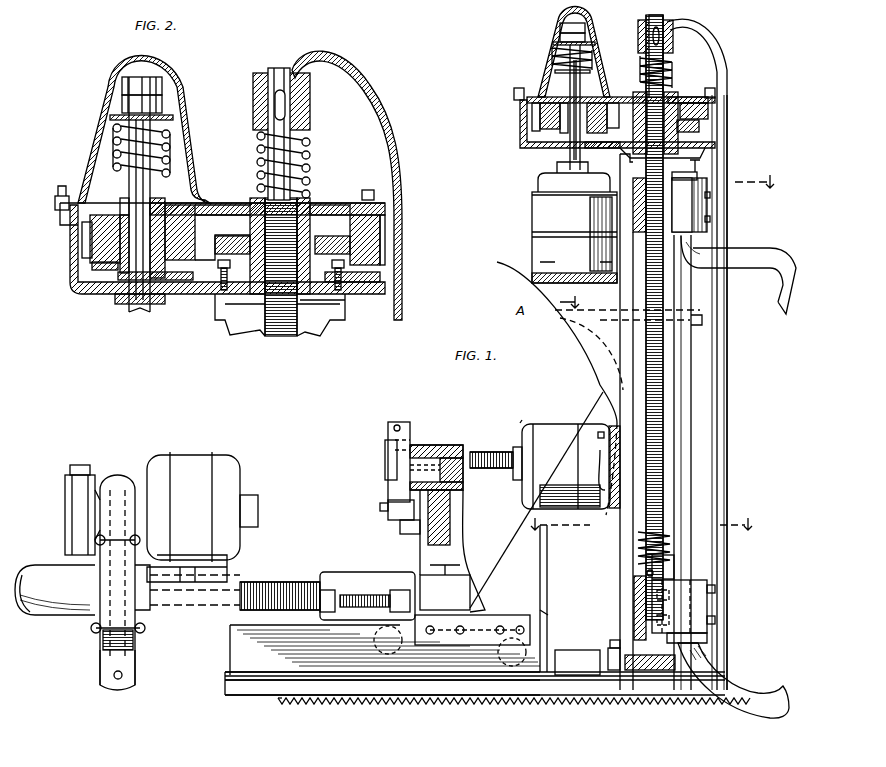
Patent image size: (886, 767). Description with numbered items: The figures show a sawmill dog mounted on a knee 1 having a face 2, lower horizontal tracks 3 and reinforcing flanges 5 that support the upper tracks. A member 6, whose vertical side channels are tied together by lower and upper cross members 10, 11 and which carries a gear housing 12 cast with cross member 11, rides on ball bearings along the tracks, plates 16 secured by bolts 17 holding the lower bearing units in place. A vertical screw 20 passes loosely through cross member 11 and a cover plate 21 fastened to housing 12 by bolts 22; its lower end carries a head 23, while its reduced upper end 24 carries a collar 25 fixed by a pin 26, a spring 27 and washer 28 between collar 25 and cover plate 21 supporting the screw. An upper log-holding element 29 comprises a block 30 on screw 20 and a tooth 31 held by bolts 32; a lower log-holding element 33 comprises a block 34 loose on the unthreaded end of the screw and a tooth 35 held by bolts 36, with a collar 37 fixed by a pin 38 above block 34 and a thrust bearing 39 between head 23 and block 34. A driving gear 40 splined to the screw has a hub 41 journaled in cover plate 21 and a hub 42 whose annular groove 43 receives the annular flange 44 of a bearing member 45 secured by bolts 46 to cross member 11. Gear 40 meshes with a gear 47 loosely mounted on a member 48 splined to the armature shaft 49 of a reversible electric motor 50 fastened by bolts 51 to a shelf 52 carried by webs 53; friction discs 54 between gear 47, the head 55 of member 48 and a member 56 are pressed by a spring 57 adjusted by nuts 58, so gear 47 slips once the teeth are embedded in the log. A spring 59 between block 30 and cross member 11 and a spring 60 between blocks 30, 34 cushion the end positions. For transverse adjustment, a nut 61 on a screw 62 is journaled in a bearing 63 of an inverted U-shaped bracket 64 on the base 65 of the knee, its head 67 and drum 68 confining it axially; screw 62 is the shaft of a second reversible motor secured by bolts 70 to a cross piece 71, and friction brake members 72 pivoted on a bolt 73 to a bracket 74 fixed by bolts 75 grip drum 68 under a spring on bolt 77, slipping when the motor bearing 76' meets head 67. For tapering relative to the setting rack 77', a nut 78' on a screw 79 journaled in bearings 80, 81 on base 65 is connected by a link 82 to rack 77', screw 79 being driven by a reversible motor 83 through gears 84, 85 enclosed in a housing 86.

In FIG. 2, the knee 1 is at (402, 292).
In FIG. 1, the knee 1 is at (718, 316).
In FIG. 1, the face 2 is at (728, 372).
In FIG. 1, the lower horizontal tracks 3 is at (576, 672).
In FIG. 1, the reinforcing flanges 5 is at (595, 345).
In FIG. 1, the member 6 is at (695, 345).
In FIG. 1, the lower cross member 10 is at (635, 712).
In FIG. 2, the upper cross member 11 is at (330, 303).
In FIG. 1, the upper cross member 11 is at (716, 150).
In FIG. 2, the gear housing 12 is at (182, 296).
In FIG. 1, the gear housing 12 is at (520, 128).
In FIG. 1, the plates 16 is at (615, 640).
In FIG. 1, the bolts 17 is at (610, 652).
In FIG. 2, the vertical screw 20 is at (285, 336).
In FIG. 1, the vertical screw 20 is at (665, 415).
In FIG. 2, the cap or cover plate 21 is at (186, 196).
In FIG. 1, the cap or cover plate 21 is at (600, 40).
In FIG. 2, the bolts 22 is at (62, 196).
In FIG. 1, the bolts 22 is at (520, 90).
In FIG. 1, the head 23 is at (640, 662).
In FIG. 2, the upper end 24 is at (279, 70).
In FIG. 1, the upper end 24 is at (657, 20).
In FIG. 2, the collar 25 is at (312, 110).
In FIG. 1, the collar 25 is at (676, 30).
In FIG. 2, the pin 26 is at (275, 102).
In FIG. 1, the pin 26 is at (651, 38).
In FIG. 2, the spring 27 is at (310, 152).
In FIG. 1, the spring 27 is at (640, 66).
In FIG. 2, the washer 28 is at (308, 197).
In FIG. 1, the washer 28 is at (638, 93).
In FIG. 1, the upper log-holding element 29 is at (710, 205).
In FIG. 1, the block 30 is at (690, 190).
In FIG. 1, the log-engaging portion or tooth 31 is at (772, 256).
In FIG. 1, the bolts 32 is at (712, 220).
In FIG. 1, the lower log-holding element 33 is at (708, 606).
In FIG. 1, the block 34 is at (636, 596).
In FIG. 1, the log-engaging portion or tooth 35 is at (750, 700).
In FIG. 1, the bolts 36 is at (715, 588).
In FIG. 1, the collar 37 is at (674, 568).
In FIG. 1, the pin 38 is at (653, 573).
In FIG. 1, the thrust bearing 39 is at (708, 645).
In FIG. 2, the gear or driving member 40 is at (362, 230).
In FIG. 1, the gear or driving member 40 is at (708, 110).
In FIG. 2, the hub 41 is at (316, 225).
In FIG. 1, the hub 41 is at (686, 98).
In FIG. 2, the hub 42 is at (258, 296).
In FIG. 2, the annular groove 43 is at (246, 247).
In FIG. 1, the annular groove 43 is at (700, 127).
In FIG. 2, the annular flange 44 is at (322, 247).
In FIG. 2, the bearing member 45 is at (346, 276).
In FIG. 1, the bearing member 45 is at (598, 148).
In FIG. 2, the bolts 46 is at (220, 266).
In FIG. 2, the gear 47 is at (88, 238).
In FIG. 1, the gear 47 is at (532, 112).
In FIG. 2, the member 48 is at (122, 240).
In FIG. 1, the member 48 is at (545, 120).
In FIG. 2, the armature shaft 49 is at (138, 306).
In FIG. 1, the armature shaft 49 is at (570, 160).
In FIG. 1, the reversible electric motor 50 is at (545, 212).
In FIG. 1, the bolts 51 is at (556, 262).
In FIG. 1, the shelf 52 is at (512, 262).
In FIG. 1, the flanges or webs 53 is at (540, 290).
In FIG. 2, the friction discs 54 is at (106, 214).
In FIG. 2, the head 55 is at (84, 284).
In FIG. 1, the head 55 is at (545, 143).
In FIG. 2, the member 56 is at (172, 216).
In FIG. 1, the member 56 is at (548, 90).
In FIG. 2, the spring 57 is at (113, 140).
In FIG. 1, the spring 57 is at (553, 56).
In FIG. 2, the adjustable nuts 58 is at (124, 95).
In FIG. 1, the adjustable nuts 58 is at (562, 30).
In FIG. 1, the spring 59 is at (556, 430).
In FIG. 1, the spring 60 is at (670, 535).
In FIG. 1, the nut 61 is at (440, 445).
In FIG. 1, the screw 62 is at (492, 452).
In FIG. 1, the bearing 63 is at (425, 445).
In FIG. 1, the inverted U-shaped bracket 64 is at (462, 520).
In FIG. 1, the base 65 is at (270, 674).
In FIG. 1, the head 67 is at (466, 446).
In FIG. 1, the drum 68 is at (386, 445).
In FIG. 1, the bolts 70 is at (600, 440).
In FIG. 1, the cross piece 71 is at (614, 510).
In FIG. 1, the friction brake members 72 is at (392, 484).
In FIG. 1, the bolt 73 is at (380, 506).
In FIG. 1, the bracket 74 is at (394, 520).
In FIG. 1, the bolts 75 is at (406, 530).
In FIG. 1, the motor 76' is at (518, 414).
In FIG. 1, the bolt 77 is at (397, 416).
In FIG. 1, the setting rack 77' is at (399, 716).
In FIG. 1, the nut 78' is at (322, 610).
In FIG. 1, the screw 79 is at (282, 582).
In FIG. 1, the bearing 80 is at (470, 578).
In FIG. 1, the bearing 81 is at (168, 598).
In FIG. 1, the link 82 is at (440, 684).
In FIG. 1, the reversible motor 83 is at (202, 517).
In FIG. 1, the gear 84 is at (120, 500).
In FIG. 1, the gear 85 is at (108, 640).
In FIG. 1, the housing 86 is at (110, 665).